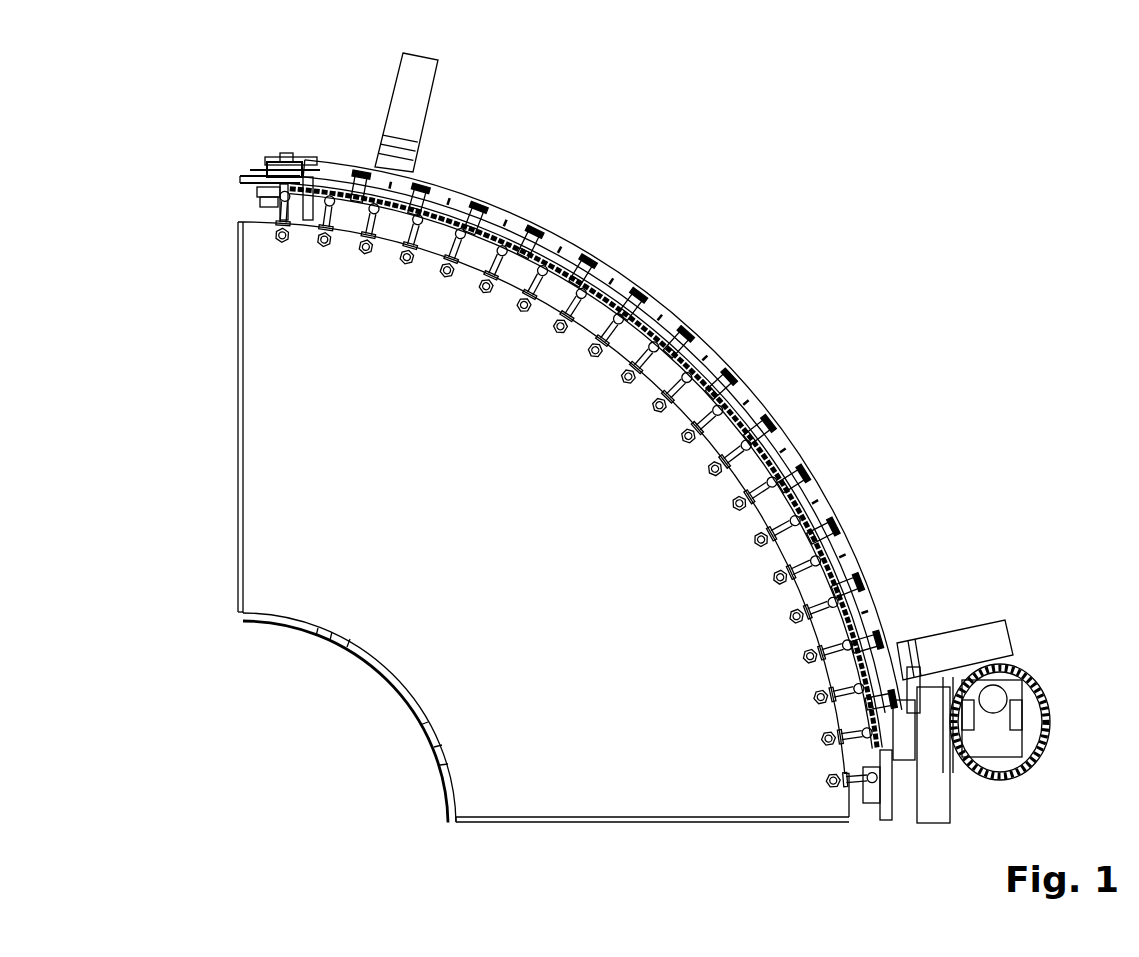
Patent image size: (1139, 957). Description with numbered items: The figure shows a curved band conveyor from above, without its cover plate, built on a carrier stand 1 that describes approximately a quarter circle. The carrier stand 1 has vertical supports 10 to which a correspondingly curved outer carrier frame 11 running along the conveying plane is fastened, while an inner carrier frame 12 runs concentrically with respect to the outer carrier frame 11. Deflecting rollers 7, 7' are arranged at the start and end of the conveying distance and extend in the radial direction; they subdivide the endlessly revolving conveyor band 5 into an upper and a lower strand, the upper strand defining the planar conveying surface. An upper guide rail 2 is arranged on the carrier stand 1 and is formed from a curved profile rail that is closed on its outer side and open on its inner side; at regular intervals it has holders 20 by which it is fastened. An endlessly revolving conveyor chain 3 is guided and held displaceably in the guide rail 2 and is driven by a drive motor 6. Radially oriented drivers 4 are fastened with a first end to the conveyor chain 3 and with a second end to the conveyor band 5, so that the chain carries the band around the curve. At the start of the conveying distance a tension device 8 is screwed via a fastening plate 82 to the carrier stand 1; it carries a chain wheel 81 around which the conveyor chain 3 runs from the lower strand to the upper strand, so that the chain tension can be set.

The carrier stand 1 is at (589, 473).
The upper guide rail 2 is at (728, 405).
The conveyor chain 3 is at (888, 815).
The drivers 4 is at (760, 482).
The conveyor band 5 is at (522, 547).
The drive motor 6 is at (1050, 718).
The deflecting roller 7 is at (207, 417).
The deflecting roller 7' is at (652, 852).
The tension device 8 is at (239, 141).
The chain wheel 81 is at (235, 182).
The fastening plate 82 is at (290, 168).
The vertical supports 10 is at (422, 99).
The outer carrier frame 11 is at (512, 222).
The inner carrier frame 12 is at (388, 682).
The holders 20 is at (600, 254).